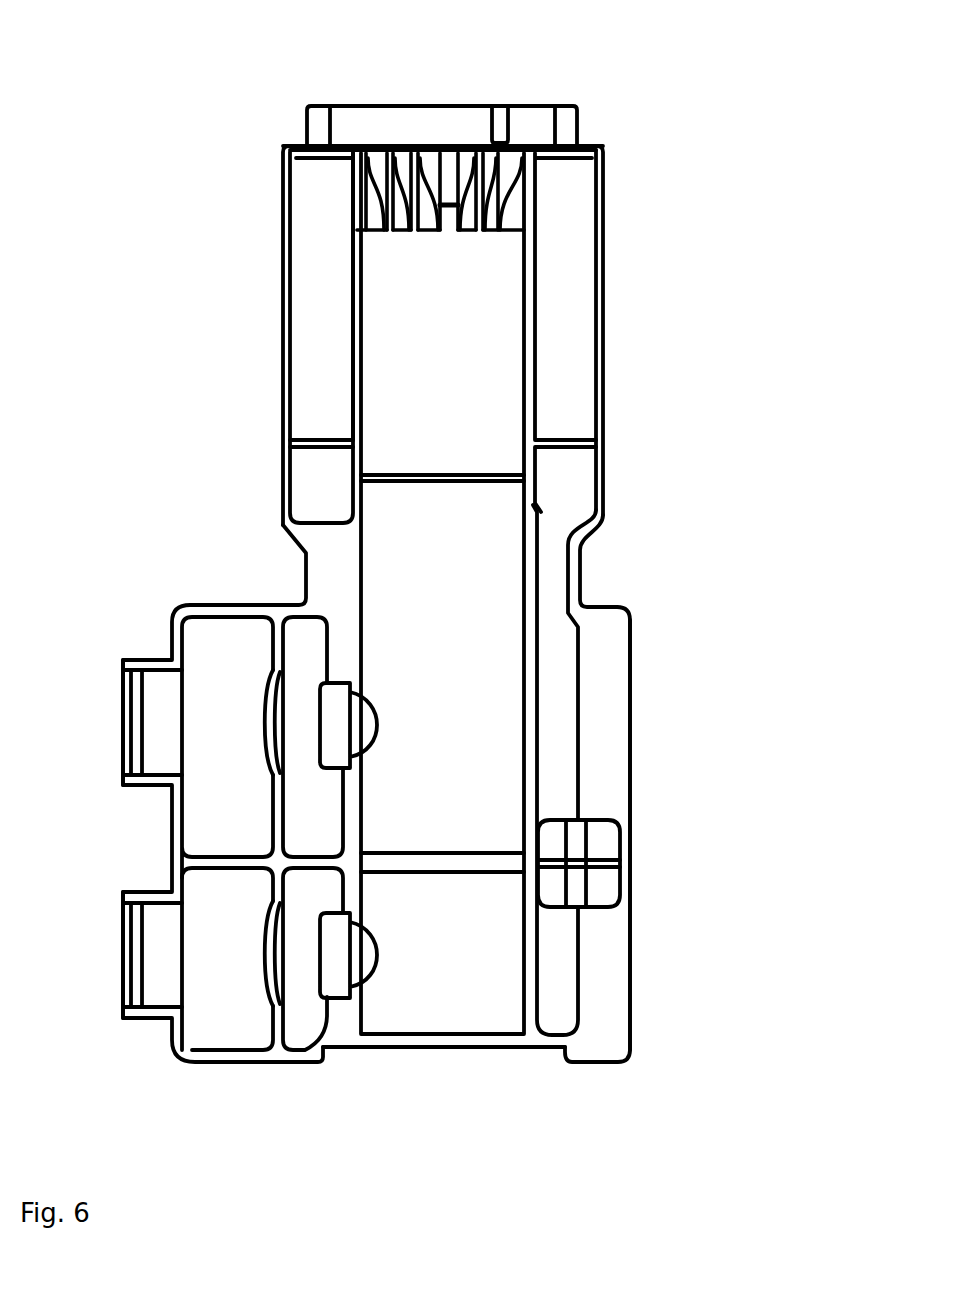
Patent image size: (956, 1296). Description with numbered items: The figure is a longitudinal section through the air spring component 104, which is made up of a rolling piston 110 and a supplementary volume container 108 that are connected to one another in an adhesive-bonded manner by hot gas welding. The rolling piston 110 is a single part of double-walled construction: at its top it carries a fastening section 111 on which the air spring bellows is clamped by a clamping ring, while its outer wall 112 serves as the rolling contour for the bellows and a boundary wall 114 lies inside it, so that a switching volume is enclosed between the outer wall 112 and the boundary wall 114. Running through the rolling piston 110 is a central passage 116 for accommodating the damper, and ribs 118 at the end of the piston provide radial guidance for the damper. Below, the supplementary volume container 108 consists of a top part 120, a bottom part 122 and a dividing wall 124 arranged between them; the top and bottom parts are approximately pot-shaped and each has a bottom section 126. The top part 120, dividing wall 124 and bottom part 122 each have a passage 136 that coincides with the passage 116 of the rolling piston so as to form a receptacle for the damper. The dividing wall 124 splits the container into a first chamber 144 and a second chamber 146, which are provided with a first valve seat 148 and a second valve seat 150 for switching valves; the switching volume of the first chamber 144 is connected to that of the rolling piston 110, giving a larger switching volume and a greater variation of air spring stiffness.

The air spring component 104 is at (572, 84).
The supplementary volume container 108 is at (643, 612).
The rolling piston 110 is at (610, 213).
The fastening section 111 is at (568, 121).
The outer wall 112 is at (596, 303).
The boundary wall 114 is at (528, 388).
The central passage 116 is at (380, 333).
The ribs 118 is at (468, 158).
The top part 120 is at (618, 660).
The bottom part 122 is at (605, 943).
The dividing wall 124 is at (592, 863).
The bottom section 126 is at (452, 1048).
The passage 136 is at (500, 547).
The first chamber 144 is at (385, 595).
The second chamber 146 is at (398, 1015).
The first valve seat 148 is at (148, 667).
The second valve seat 150 is at (148, 1012).